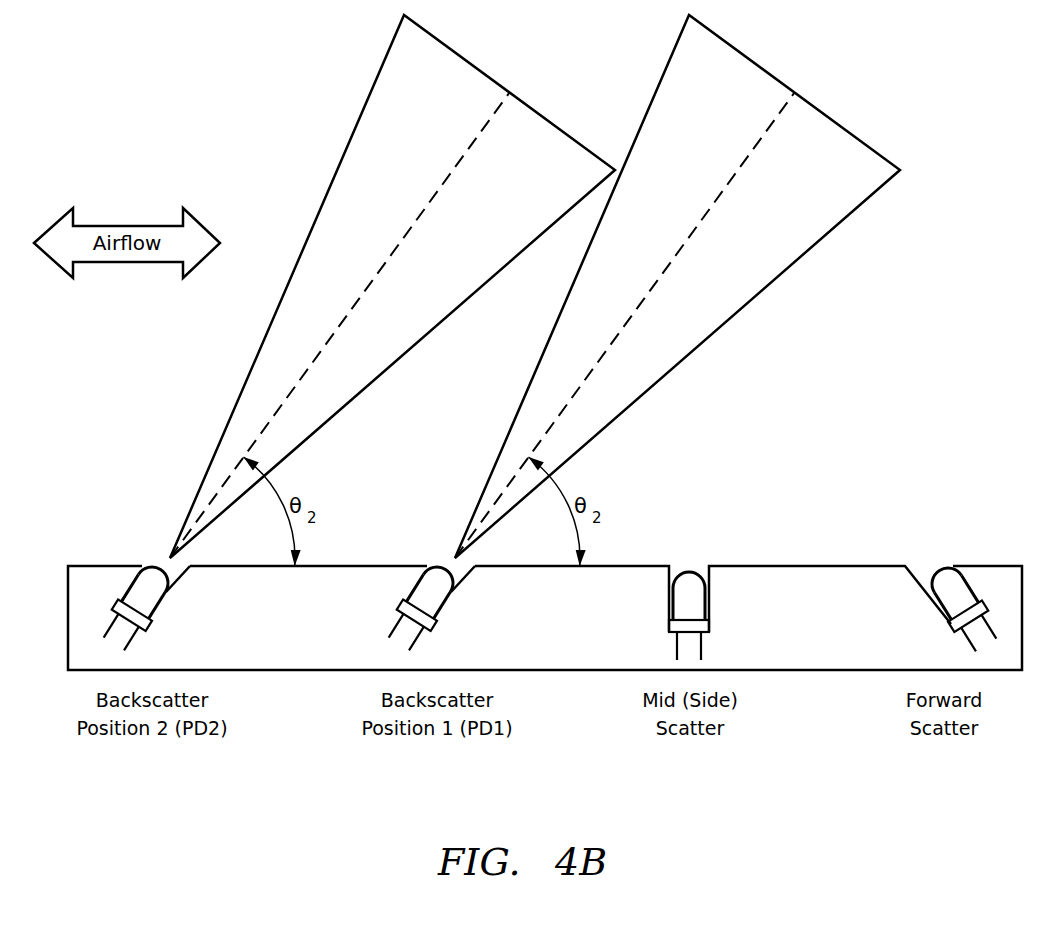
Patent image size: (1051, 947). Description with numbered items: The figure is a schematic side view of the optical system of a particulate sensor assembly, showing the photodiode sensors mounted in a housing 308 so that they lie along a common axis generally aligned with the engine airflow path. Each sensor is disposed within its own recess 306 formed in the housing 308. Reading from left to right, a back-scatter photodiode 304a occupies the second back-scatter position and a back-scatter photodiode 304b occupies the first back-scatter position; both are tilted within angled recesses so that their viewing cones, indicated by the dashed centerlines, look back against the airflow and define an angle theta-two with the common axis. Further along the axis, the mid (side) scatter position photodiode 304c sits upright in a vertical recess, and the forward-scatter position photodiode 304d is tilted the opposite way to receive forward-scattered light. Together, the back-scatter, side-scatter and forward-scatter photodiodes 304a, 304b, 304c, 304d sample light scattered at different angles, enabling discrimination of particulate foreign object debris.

The back-scatter photodiode 304a is at (145, 587).
The back-scatter photodiode 304b is at (430, 587).
The mid (side) scatter position photodiode 304c is at (697, 600).
The forward-scatter position photodiode 304d is at (960, 593).
The recess 306 is at (467, 580).
The housing 308 is at (326, 632).